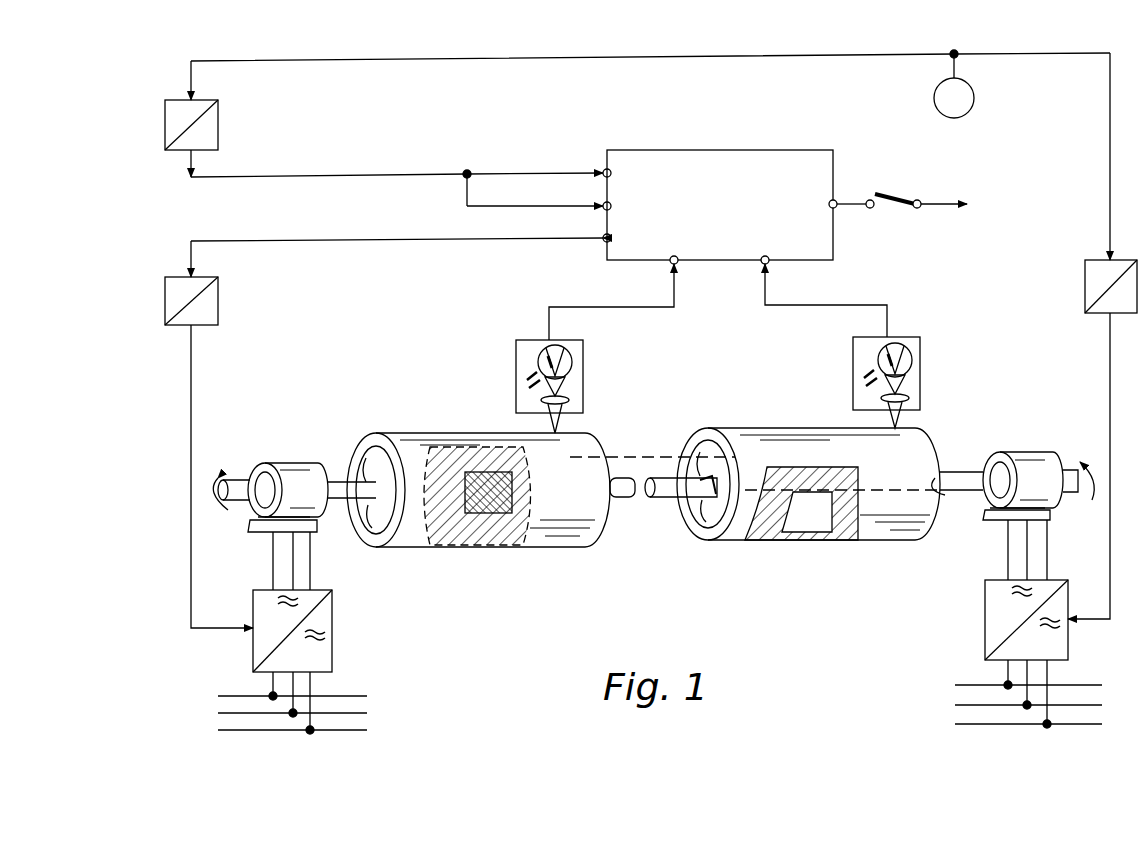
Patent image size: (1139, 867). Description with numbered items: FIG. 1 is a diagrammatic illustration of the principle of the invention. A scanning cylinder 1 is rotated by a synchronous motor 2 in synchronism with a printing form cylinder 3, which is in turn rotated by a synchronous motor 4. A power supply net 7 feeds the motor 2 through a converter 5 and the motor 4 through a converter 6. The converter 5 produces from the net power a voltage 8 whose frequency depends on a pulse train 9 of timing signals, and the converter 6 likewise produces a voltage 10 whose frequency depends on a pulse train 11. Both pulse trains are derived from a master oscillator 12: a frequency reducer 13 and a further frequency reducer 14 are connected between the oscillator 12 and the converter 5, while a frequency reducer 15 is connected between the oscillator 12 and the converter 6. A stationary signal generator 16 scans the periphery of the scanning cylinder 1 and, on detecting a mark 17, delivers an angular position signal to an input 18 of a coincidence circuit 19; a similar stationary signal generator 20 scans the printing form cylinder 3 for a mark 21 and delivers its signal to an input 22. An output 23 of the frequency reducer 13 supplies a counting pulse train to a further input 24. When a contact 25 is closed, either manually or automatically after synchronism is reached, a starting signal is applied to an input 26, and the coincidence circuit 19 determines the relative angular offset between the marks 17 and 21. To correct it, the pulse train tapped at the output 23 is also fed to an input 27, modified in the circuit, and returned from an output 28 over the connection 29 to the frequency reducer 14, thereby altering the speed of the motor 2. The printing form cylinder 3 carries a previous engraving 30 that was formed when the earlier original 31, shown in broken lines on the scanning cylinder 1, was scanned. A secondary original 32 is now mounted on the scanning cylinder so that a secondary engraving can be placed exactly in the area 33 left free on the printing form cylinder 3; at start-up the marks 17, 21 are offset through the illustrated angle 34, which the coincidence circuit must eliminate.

The scanning cylinder 1 is at (550, 515).
The synchronous motor 2 is at (292, 470).
The printing form cylinder 3 is at (880, 515).
The synchronous motor 4 is at (1025, 460).
The converter 5 is at (332, 610).
The converter 6 is at (985, 598).
The power supply net 7 is at (230, 700).
The voltage 8 is at (300, 565).
The pulse train 9 is at (245, 640).
The second motor leads 10 is at (1018, 555).
The pulse train 11 is at (1070, 625).
The master oscillator 12 is at (974, 98).
The frequency reducer 13 is at (218, 112).
The frequency reducer 14 is at (218, 302).
The frequency reducer 15 is at (1100, 305).
The stationary signal generator 16 is at (583, 370).
The mark 17 is at (582, 453).
The input 18 is at (670, 264).
The coincidence circuit 19 is at (805, 178).
The stationary signal generator 20 is at (920, 366).
The mark 21 is at (940, 470).
The input 22 is at (769, 264).
The output 23 is at (198, 155).
The input 24 is at (603, 170).
The contact 25 is at (895, 200).
The input 26 is at (838, 210).
The input 27 is at (600, 203).
The output 28 is at (603, 241).
The line to second divider 29 is at (198, 272).
The previous engraving 30 is at (800, 465).
The marking area on first drum 31 is at (448, 445).
The secondary original 32 is at (480, 510).
The area 33 is at (805, 530).
The angle 34 is at (700, 500).